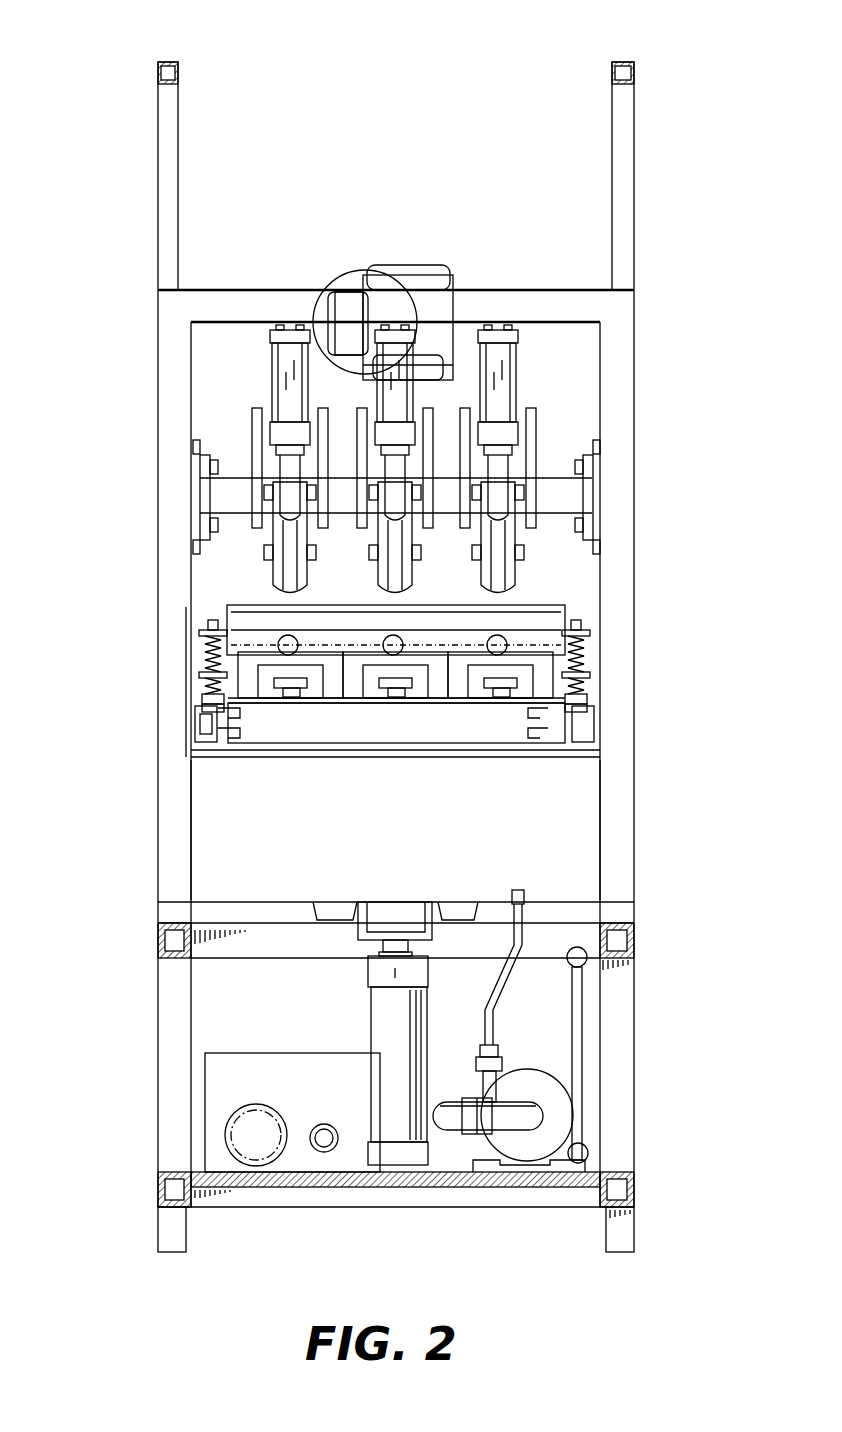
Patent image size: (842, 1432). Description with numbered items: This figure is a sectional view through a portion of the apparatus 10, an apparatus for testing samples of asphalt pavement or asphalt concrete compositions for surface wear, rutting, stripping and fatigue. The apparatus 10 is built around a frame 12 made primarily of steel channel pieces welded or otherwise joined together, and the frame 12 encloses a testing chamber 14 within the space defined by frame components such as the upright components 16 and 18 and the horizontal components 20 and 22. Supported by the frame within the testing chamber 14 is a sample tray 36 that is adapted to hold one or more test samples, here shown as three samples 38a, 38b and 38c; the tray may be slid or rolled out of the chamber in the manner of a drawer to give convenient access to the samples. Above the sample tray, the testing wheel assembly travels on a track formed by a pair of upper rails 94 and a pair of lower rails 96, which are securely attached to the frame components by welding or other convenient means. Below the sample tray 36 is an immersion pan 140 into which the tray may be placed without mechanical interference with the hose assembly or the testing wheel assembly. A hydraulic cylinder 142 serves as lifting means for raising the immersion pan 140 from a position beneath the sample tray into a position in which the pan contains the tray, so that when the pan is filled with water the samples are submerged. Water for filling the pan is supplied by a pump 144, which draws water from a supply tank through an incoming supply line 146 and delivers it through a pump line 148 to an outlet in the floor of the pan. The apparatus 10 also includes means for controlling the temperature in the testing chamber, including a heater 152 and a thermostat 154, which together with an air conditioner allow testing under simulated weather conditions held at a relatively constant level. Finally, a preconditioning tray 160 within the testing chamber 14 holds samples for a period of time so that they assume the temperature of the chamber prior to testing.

The apparatus 10 is at (460, 80).
The frame 12 is at (152, 840).
The testing chamber 14 is at (232, 587).
The frame component 16 is at (157, 335).
The frame component 18 is at (628, 340).
The frame component 20 is at (550, 930).
The frame component 22 is at (205, 290).
The sample tray 36 is at (260, 725).
The sample 38a is at (270, 672).
The sample 38b is at (358, 690).
The sample 38c is at (460, 690).
The upper rails 94 is at (200, 440).
The lower rails 96 is at (202, 545).
The immersion pan 140 is at (272, 838).
The hydraulic cylinder 142 is at (370, 1000).
The pump 144 is at (533, 1072).
The incoming supply line 146 is at (437, 1100).
The pump line 148 is at (510, 1015).
The heater 152 is at (257, 1104).
The thermostat 154 is at (327, 1153).
The preconditioning tray 160 is at (232, 1055).